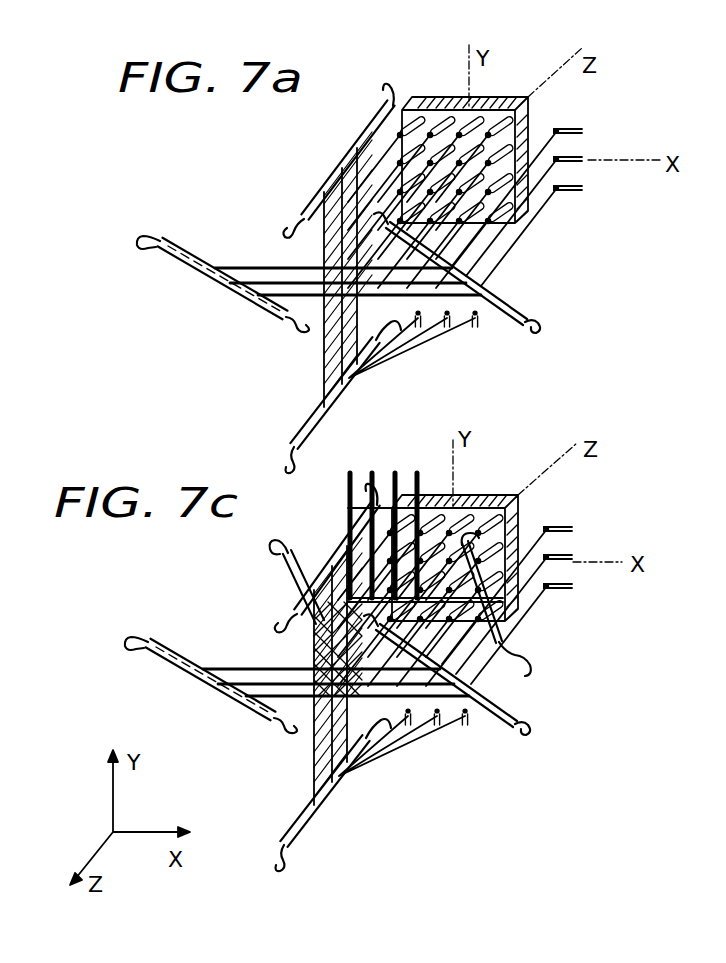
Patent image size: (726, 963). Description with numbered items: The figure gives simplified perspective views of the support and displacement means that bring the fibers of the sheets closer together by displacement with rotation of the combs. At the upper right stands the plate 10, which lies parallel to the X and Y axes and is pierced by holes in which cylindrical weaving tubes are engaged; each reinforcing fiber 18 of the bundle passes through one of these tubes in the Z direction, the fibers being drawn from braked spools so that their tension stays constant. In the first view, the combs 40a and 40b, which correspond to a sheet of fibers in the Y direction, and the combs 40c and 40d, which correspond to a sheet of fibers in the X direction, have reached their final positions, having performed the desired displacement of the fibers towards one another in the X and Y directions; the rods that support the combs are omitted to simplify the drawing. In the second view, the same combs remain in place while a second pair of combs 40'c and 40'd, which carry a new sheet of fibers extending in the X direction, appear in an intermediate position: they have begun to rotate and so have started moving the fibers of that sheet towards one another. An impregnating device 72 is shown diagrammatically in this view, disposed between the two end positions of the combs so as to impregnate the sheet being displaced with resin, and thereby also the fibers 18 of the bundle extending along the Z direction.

In FIG. 7A, the plate 10 is at (535, 122).
In FIG. 7C, the plate 10 is at (520, 508).
In FIG. 7C, the reinforcing fiber 18 is at (305, 660).
In FIG. 7C, the impregnating device 72 is at (349, 510).
In FIG. 7A, the comb 40a is at (314, 198).
In FIG. 7C, the comb 40a is at (293, 612).
In FIG. 7A, the comb 40b is at (303, 432).
In FIG. 7C, the comb 40b is at (292, 848).
In FIG. 7A, the comb 40c is at (268, 315).
In FIG. 7C, the comb 40c is at (172, 668).
In FIG. 7A, the comb 40d is at (512, 313).
In FIG. 7C, the comb 40d is at (493, 725).
In FIG. 7C, the comb 40'c is at (264, 582).
In FIG. 7C, the comb 40'd is at (540, 604).